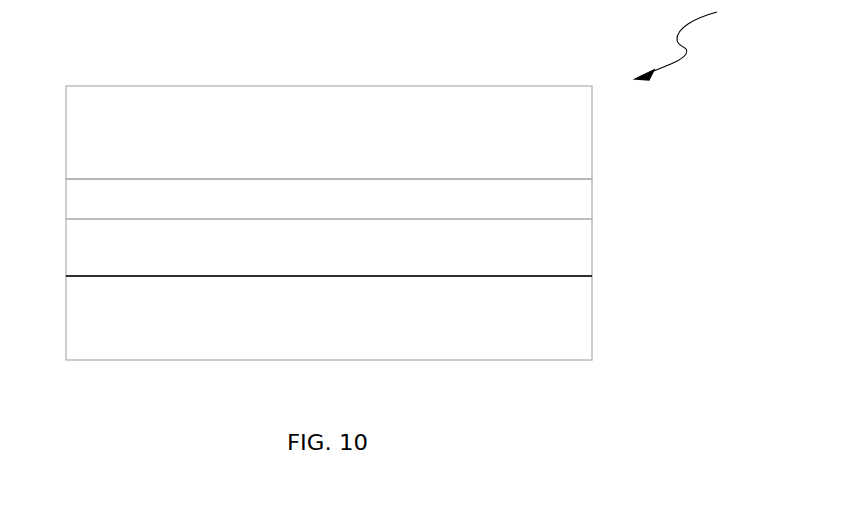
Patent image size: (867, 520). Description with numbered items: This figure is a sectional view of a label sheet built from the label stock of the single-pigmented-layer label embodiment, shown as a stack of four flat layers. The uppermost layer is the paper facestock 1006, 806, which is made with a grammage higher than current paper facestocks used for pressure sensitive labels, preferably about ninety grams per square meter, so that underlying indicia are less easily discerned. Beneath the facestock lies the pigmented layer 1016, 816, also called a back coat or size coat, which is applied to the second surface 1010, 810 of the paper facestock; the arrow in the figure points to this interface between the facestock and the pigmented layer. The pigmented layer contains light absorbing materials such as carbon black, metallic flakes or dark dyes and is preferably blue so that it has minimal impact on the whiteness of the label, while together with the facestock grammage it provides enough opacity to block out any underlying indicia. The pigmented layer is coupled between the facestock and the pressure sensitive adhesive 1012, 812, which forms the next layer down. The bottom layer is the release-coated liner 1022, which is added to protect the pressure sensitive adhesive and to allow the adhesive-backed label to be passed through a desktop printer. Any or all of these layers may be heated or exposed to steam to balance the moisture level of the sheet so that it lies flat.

The paper facestock 1006 is at (395, 132).
The paper facestock 806 is at (565, 117).
The pigmented layer 1016 is at (397, 199).
The pigmented layer 816 is at (570, 198).
The pressure sensitive adhesive 1012 is at (394, 247).
The pressure sensitive adhesive 812 is at (565, 248).
The release-coated liner 1022 is at (576, 317).
The second surface 1010 is at (329, 296).
The second surface 810 is at (473, 181).